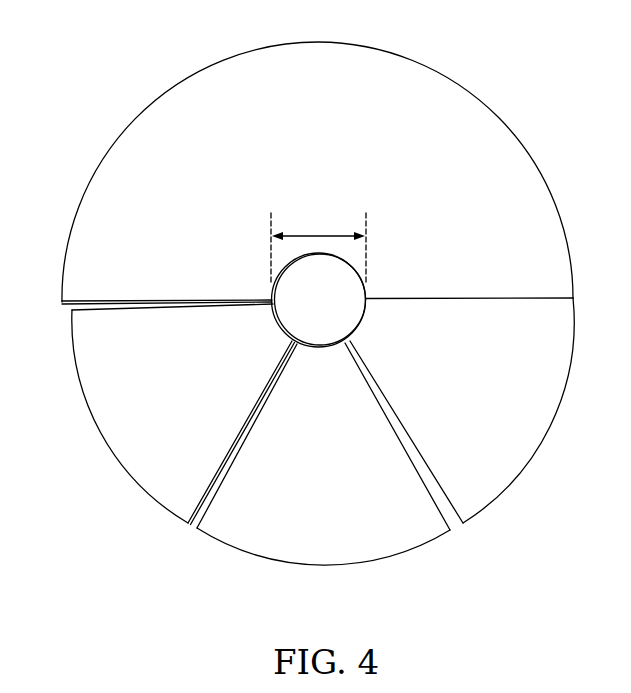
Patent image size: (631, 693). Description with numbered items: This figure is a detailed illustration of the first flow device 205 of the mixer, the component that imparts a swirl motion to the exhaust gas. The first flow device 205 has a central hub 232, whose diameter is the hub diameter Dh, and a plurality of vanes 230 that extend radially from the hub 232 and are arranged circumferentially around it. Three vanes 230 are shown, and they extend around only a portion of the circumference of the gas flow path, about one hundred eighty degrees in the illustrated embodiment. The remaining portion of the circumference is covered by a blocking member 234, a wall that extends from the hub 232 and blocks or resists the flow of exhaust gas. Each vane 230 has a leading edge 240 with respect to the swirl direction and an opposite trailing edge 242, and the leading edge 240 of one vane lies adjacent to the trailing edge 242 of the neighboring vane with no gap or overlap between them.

The first flow device 205 is at (392, 93).
The blocking member 234 is at (483, 150).
The central hub 232 is at (307, 308).
The vanes 230 is at (108, 413).
The leading edges 240 is at (227, 462).
The trailing edges 242 is at (121, 311).